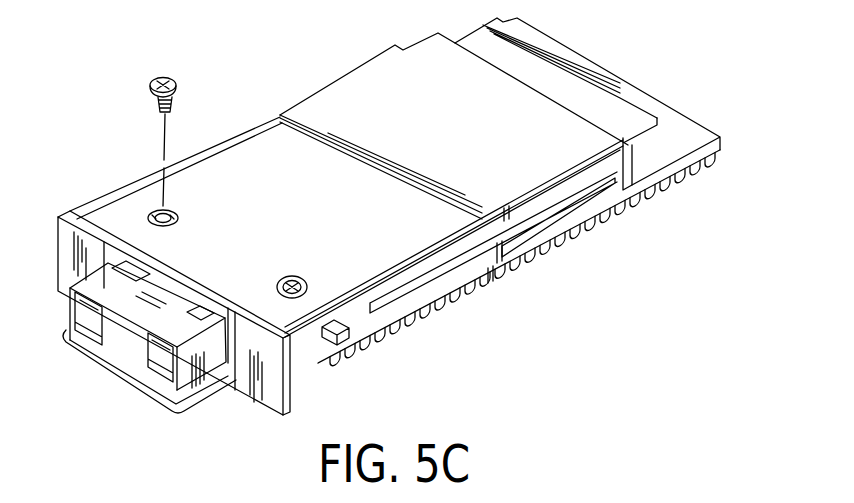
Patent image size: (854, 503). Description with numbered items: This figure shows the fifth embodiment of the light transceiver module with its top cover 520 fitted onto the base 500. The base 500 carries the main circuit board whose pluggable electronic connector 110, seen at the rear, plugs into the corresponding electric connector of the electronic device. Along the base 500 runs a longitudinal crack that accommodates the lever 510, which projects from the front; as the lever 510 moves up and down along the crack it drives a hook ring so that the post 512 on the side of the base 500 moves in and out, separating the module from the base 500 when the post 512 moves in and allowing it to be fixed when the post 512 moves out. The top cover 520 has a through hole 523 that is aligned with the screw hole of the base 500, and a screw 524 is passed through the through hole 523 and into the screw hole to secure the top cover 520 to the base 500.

The pluggable electronic connector 110 is at (604, 110).
The base 500 is at (288, 388).
The lever 510 is at (138, 389).
The post 512 is at (346, 334).
The top cover 520 is at (360, 107).
The through hole 523 is at (153, 212).
The screw 524 is at (153, 109).